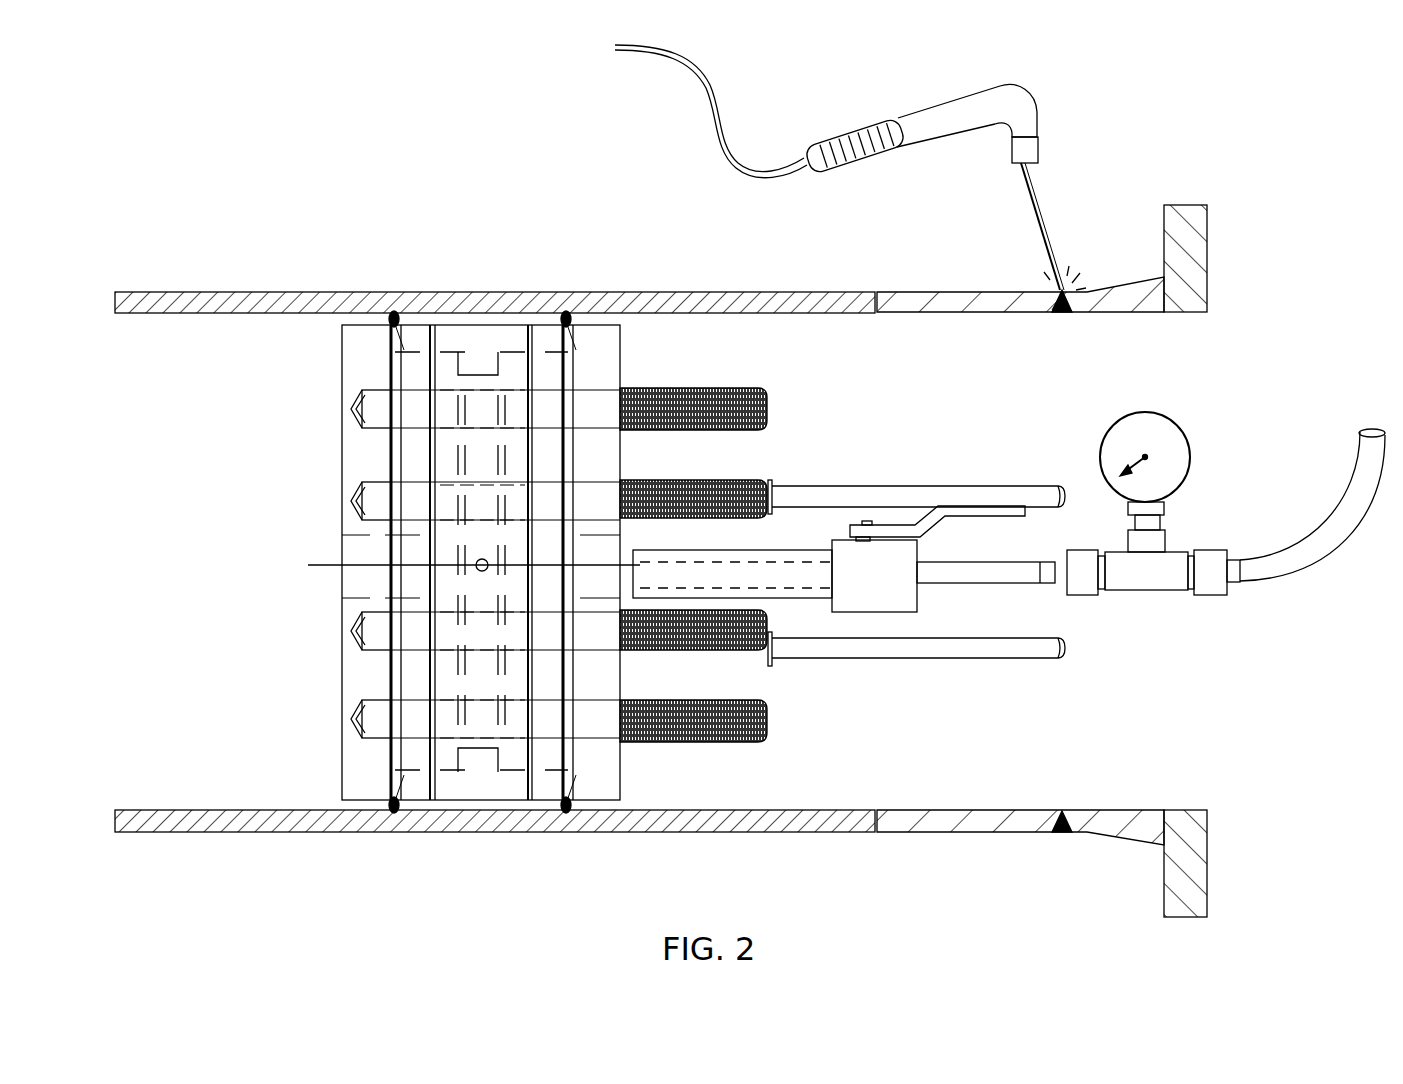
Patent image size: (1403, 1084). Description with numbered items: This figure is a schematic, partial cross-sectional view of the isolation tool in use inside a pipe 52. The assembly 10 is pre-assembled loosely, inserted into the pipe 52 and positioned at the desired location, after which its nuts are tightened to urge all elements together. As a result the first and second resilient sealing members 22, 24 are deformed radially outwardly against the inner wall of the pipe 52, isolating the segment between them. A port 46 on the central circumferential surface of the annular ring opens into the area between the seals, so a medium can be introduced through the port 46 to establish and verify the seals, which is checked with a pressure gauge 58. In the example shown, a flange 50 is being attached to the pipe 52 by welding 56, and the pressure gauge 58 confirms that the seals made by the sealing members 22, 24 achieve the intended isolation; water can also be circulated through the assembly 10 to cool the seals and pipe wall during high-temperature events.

The assembly 10 is at (290, 513).
The first resilient sealing member 22 is at (397, 314).
The second resilient sealing member 24 is at (572, 314).
The port 46 is at (476, 569).
The flange 50 is at (1208, 829).
The pipe 52 is at (1012, 830).
The welding 56 is at (1078, 219).
The pressure gauge 58 is at (1162, 609).